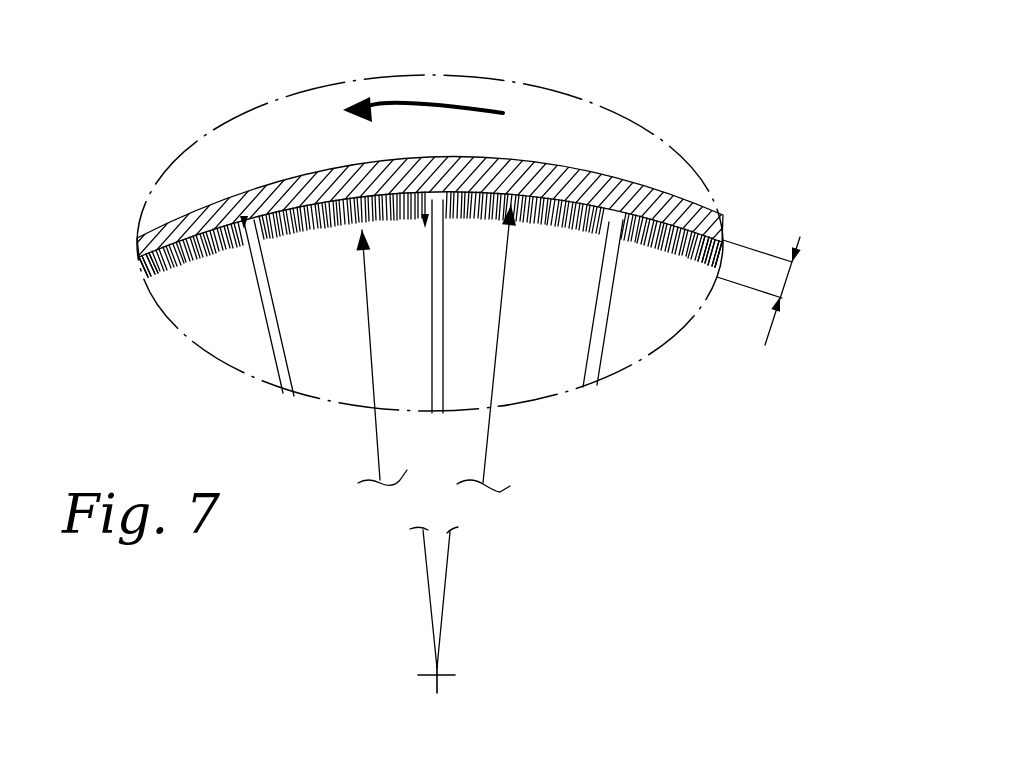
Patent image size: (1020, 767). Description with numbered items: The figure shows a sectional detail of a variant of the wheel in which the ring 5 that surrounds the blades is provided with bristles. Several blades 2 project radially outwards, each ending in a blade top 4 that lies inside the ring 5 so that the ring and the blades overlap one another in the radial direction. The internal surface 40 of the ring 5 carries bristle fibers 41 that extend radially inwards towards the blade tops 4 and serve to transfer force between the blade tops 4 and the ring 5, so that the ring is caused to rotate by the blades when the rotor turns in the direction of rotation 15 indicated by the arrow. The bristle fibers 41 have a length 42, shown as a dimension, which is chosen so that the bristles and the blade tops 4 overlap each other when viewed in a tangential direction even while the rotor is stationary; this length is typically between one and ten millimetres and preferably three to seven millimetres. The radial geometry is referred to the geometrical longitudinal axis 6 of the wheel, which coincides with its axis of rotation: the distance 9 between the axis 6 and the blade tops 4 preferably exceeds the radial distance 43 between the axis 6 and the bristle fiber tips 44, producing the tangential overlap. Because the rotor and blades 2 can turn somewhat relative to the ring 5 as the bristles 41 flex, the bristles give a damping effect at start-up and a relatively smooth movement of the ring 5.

The blade 2 is at (277, 353).
The blade top 4 is at (243, 222).
The ring 5 is at (612, 192).
The geometrical longitudinal axis 6 is at (440, 672).
The distance between the geometrical longitudinal axis and the blade tops 9 is at (492, 430).
The direction of rotation 15 is at (418, 102).
The internal surface of the ring 40 is at (576, 222).
The bristles 41 is at (170, 252).
The length of the bristle fibers 42 is at (787, 273).
The radial distance between the geometrical longitudinal axis and the bristle fiber 43 is at (378, 440).
The bristle fiber tips 44 is at (320, 228).